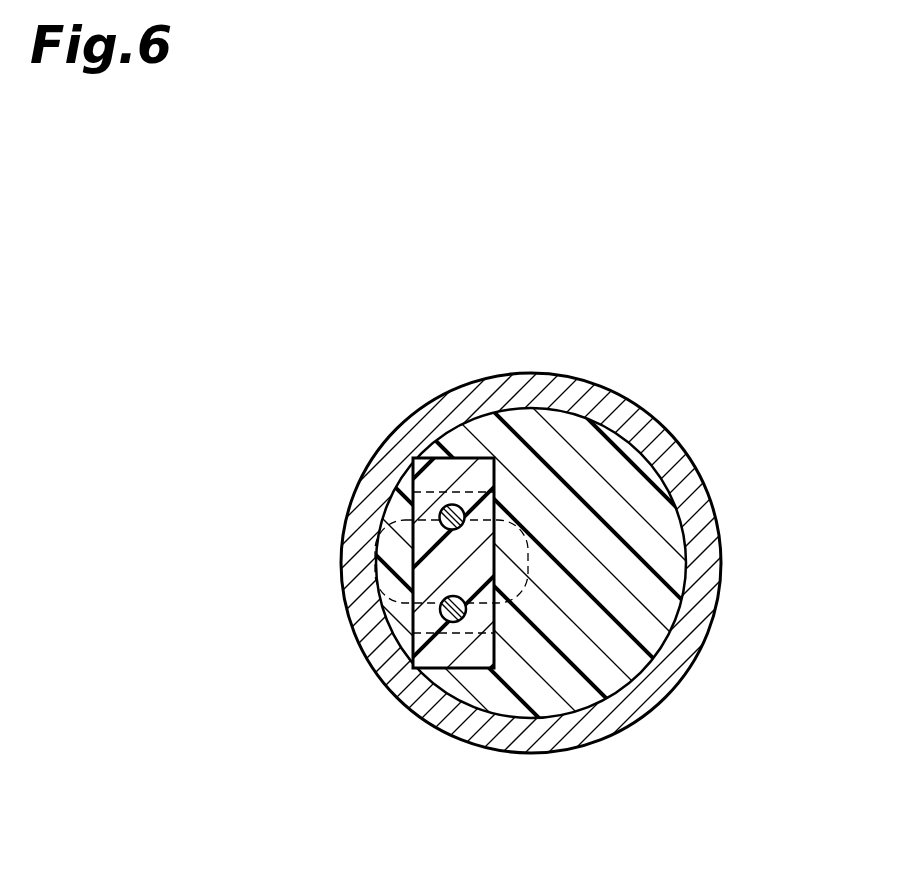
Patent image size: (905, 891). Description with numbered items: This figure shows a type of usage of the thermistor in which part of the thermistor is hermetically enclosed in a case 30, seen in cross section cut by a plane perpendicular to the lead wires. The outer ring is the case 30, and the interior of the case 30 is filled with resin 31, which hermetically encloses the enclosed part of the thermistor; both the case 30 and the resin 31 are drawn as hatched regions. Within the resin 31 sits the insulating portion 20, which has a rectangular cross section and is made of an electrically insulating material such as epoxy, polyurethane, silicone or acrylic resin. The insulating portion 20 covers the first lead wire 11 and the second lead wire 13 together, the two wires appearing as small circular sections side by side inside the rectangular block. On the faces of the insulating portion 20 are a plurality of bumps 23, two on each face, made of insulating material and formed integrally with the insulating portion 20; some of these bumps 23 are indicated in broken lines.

The first lead wire 11 is at (443, 518).
The second lead wire 13 is at (445, 610).
The insulating portion 20 is at (498, 500).
The bumps 23 is at (446, 458).
The case 30 is at (657, 413).
The resin 31 is at (667, 592).